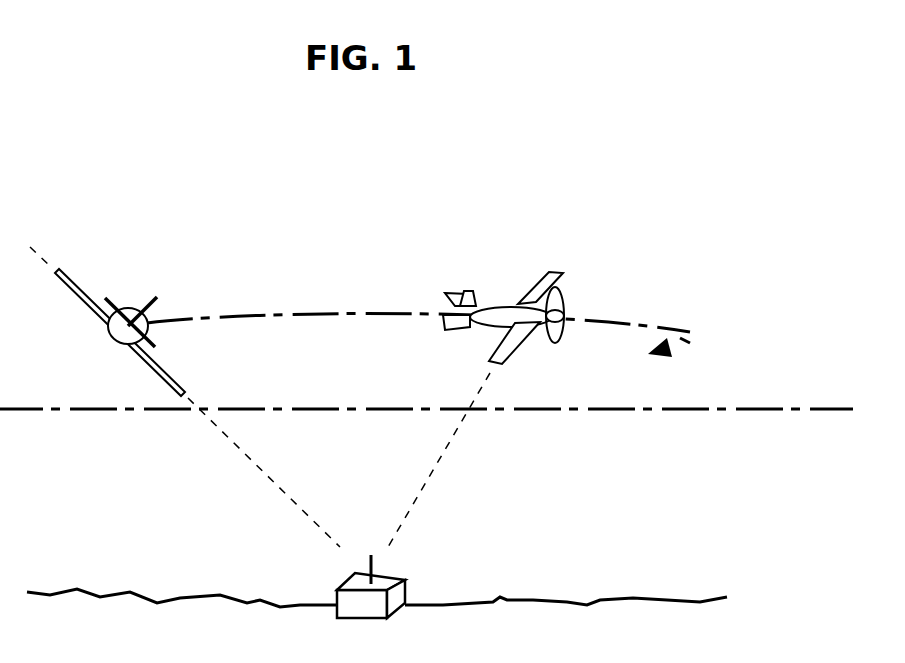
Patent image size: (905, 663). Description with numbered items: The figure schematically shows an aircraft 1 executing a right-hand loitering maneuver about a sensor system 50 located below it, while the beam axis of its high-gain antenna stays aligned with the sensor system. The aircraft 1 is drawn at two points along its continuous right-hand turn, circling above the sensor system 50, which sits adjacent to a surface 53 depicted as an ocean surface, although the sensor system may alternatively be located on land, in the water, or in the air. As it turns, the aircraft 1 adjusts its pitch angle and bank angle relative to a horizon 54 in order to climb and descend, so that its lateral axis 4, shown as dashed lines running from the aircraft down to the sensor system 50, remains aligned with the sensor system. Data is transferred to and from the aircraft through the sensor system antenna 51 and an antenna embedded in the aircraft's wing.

The aircraft 1 is at (440, 288).
The lateral axis 4 is at (237, 453).
The sensor system 50 is at (325, 588).
The sensor system antenna 51 is at (387, 562).
The surface 53 is at (665, 588).
The horizon 54 is at (762, 395).